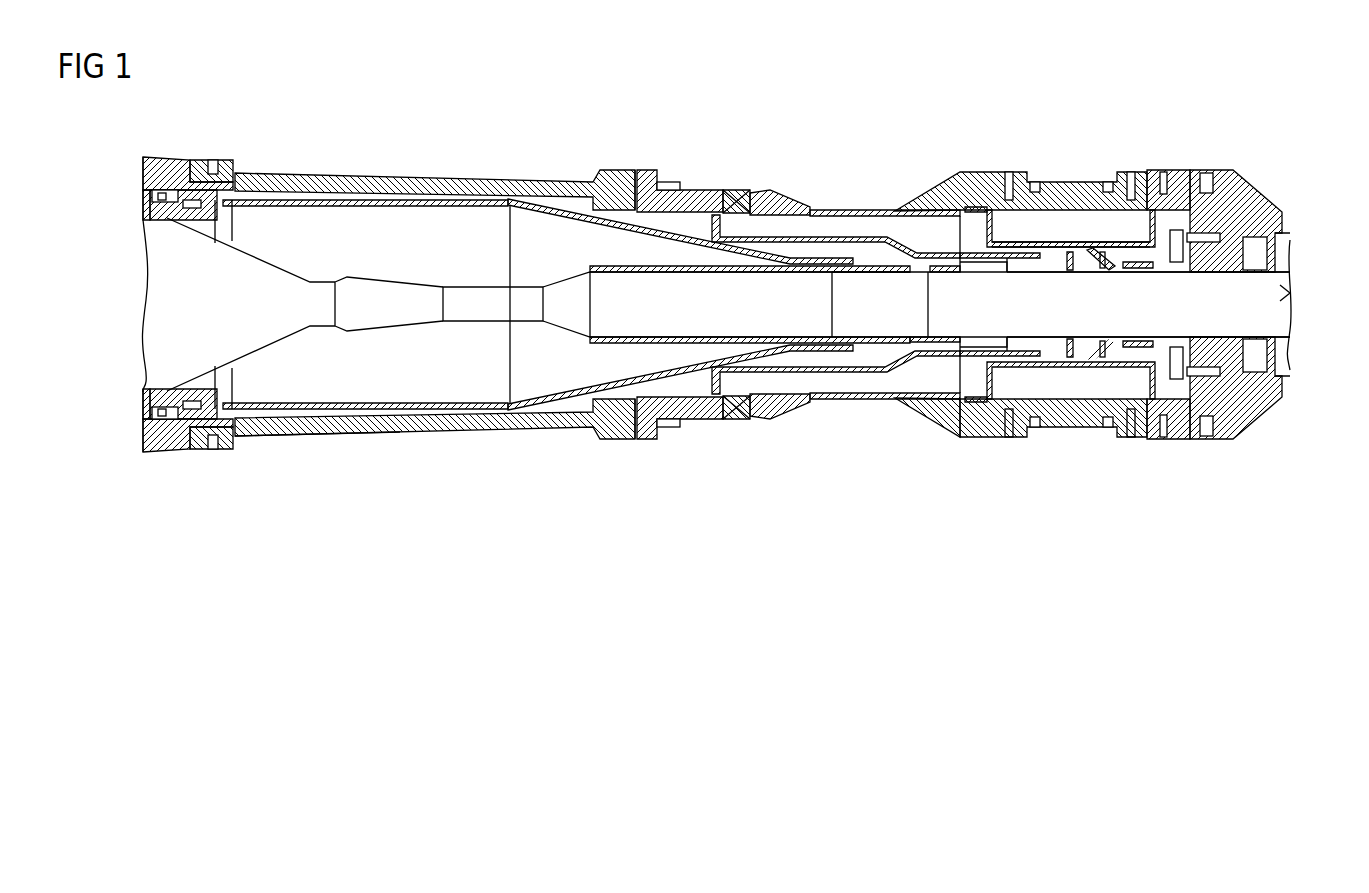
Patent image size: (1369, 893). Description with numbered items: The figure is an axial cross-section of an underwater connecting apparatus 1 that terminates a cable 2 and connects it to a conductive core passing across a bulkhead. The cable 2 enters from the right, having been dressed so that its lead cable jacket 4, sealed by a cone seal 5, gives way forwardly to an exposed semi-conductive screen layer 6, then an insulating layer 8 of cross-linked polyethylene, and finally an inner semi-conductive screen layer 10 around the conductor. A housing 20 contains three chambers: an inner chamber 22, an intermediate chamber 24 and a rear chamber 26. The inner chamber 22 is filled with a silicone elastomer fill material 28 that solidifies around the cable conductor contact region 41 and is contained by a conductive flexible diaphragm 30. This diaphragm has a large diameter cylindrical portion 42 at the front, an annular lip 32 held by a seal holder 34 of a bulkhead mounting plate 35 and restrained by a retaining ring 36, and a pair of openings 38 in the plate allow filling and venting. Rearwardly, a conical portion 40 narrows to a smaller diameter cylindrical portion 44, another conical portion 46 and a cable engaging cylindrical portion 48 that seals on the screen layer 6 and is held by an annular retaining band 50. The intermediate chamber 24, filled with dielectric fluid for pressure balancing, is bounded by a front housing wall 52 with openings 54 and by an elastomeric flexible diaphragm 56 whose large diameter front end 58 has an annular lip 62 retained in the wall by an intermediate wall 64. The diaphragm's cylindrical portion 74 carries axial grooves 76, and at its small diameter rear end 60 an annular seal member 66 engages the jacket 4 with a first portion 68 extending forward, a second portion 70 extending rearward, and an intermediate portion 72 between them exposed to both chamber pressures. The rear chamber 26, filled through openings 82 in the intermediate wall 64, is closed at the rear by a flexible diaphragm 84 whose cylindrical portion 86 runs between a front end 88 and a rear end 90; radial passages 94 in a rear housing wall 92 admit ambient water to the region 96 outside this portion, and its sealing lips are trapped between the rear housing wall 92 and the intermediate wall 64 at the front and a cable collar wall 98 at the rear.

The underwater connecting apparatus 1 is at (606, 109).
The cable 2 is at (1295, 293).
The cable jacket 4 is at (1285, 326).
The cone seal 5 is at (1238, 378).
The semi-conductive screen layer 6 is at (883, 325).
The insulating layer 8 is at (613, 330).
The inner semi-conductive screen layer 10 is at (480, 318).
The housing 20 is at (470, 431).
The inner chamber 22 is at (478, 218).
The intermediate chamber 24 is at (795, 268).
The rear chamber 26 is at (1120, 268).
The silicone elastomer fill material 28 is at (380, 373).
The flexible diaphragm 30 is at (360, 189).
The annular lip 32 is at (194, 392).
The seal holder 34 is at (201, 221).
The bulkhead mounting plate 35 is at (146, 205).
The retaining ring 36 is at (196, 188).
The openings 38 is at (166, 208).
The conical portion 40 is at (572, 227).
The cable conductor contact region 41 is at (375, 281).
The large diameter cylindrical portion 42 is at (320, 207).
The smaller diameter cylindrical portion 44 is at (818, 274).
The conical portion 46 is at (871, 210).
The cable engaging cylindrical portion 48 is at (880, 273).
The annular retaining band 50 is at (918, 336).
The front housing wall 52 is at (368, 430).
The openings 54 is at (212, 170).
The flexible diaphragm 56 is at (757, 238).
The large diameter front end 58 is at (690, 415).
The small diameter rear end 60 is at (980, 234).
The annular lip 62 is at (672, 208).
The intermediate wall 64 is at (690, 188).
The annular seal member 66 is at (1000, 329).
The first annularly and axially extending portion 68 is at (967, 274).
The second annularly and axially extending portion 70 is at (985, 278).
The intermediate annularly extending portion 72 is at (995, 376).
The generally cylindrical portion 74 is at (786, 390).
The grooves 76 is at (797, 238).
The openings 82 is at (740, 192).
The flexible diaphragm 84 is at (1060, 246).
The generally cylindrical portion 86 is at (1083, 240).
The front end 88 is at (967, 432).
The rear end 90 is at (1178, 178).
The rear housing wall 92 is at (1087, 430).
The radial passages 94 is at (1012, 175).
The region 96 is at (1167, 413).
The cable collar wall 98 is at (1157, 190).